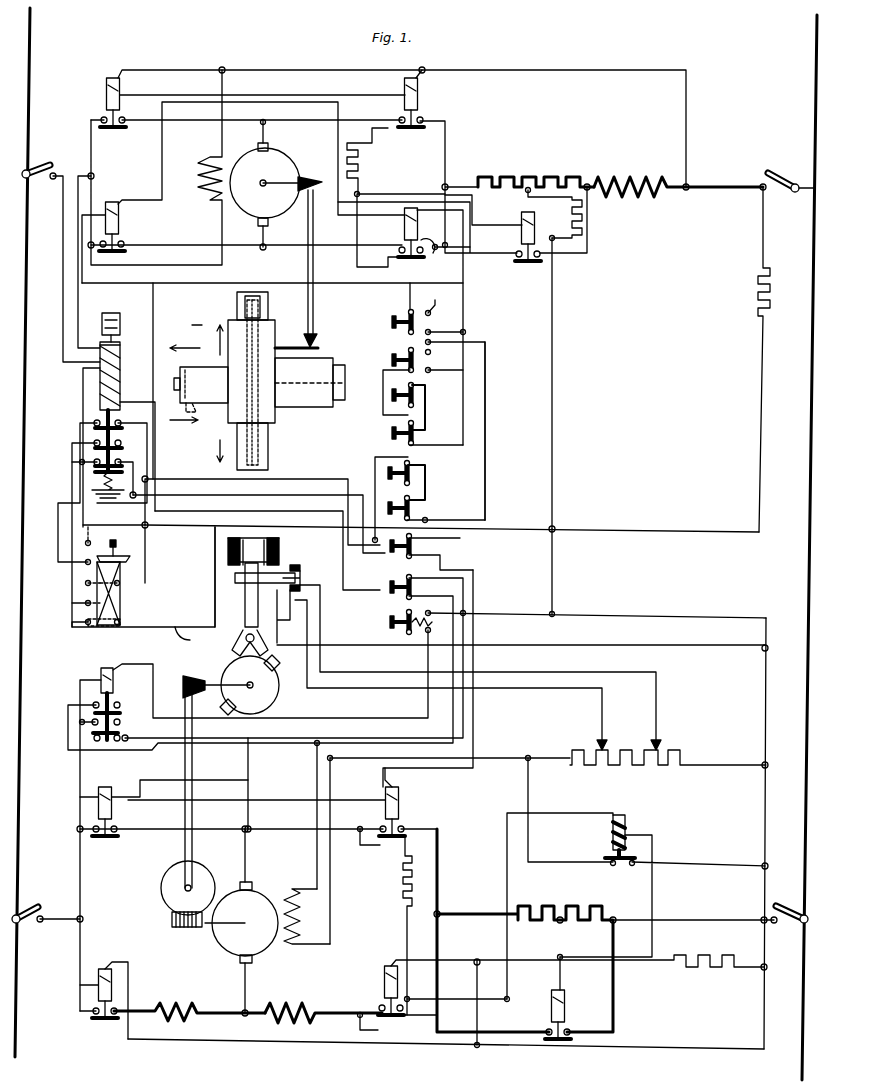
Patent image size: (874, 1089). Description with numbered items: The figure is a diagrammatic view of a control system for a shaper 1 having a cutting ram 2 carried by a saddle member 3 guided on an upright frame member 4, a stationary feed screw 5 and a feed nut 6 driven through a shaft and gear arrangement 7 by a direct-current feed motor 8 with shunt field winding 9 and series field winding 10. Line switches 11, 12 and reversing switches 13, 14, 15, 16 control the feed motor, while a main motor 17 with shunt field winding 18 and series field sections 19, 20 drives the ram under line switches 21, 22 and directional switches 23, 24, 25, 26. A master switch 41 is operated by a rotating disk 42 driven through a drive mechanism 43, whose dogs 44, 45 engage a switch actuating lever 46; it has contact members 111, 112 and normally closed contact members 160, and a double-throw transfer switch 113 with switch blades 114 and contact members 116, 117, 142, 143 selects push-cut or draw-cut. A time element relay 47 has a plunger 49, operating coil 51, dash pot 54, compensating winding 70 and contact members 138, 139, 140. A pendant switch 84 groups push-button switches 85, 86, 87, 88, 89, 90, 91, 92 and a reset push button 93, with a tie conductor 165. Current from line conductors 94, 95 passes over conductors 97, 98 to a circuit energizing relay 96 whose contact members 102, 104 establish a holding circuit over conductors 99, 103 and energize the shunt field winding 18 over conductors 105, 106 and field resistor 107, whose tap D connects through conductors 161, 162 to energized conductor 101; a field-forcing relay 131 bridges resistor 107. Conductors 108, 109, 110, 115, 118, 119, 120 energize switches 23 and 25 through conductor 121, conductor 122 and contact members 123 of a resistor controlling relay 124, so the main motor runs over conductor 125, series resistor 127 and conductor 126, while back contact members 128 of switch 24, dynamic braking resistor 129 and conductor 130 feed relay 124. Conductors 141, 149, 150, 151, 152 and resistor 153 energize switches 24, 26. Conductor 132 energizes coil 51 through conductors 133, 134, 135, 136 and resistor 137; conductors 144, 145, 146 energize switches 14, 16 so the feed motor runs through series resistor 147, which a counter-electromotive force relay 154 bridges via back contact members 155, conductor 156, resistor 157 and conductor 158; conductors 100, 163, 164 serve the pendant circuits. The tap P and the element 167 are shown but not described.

The line conductor 94 is at (28, 70).
The line conductor 95 is at (816, 62).
The conductor 146 is at (618, 67).
The reversing switch 13 is at (115, 78).
The reversing switch 14 is at (425, 70).
The shunt field winding 9 is at (215, 160).
The feed motor 8 is at (280, 160).
The shaft and gear arrangement 7 is at (314, 224).
The reversing switch 16 is at (119, 226).
The conductor 145 is at (420, 287).
The reversing switch 15 is at (404, 226).
The back contact members 155 is at (443, 242).
The conductor 164 is at (372, 140).
The conductor 156 is at (385, 187).
The series resistor 147 is at (545, 176).
The series field winding 10 is at (625, 175).
The line switch 12 is at (776, 170).
The resistor 157 is at (585, 237).
The counter-electromotive force relay 154 is at (522, 239).
The conductor 158 is at (553, 280).
The resistor 137 is at (771, 293).
The line switch 11 is at (50, 163).
The dash pot 54 is at (122, 316).
The operating coil 51 is at (121, 380).
The compensating winding 70 is at (118, 352).
The plunger 49 is at (100, 352).
The time element relay 47 is at (68, 391).
The conductor 133 is at (83, 406).
The contact members 138 is at (104, 486).
The contact member 139 is at (111, 529).
The contact members 140 is at (109, 471).
The conductor 149 is at (76, 470).
The conductor 144 is at (156, 308).
The shaper 1 is at (198, 384).
The upright frame member 4 is at (268, 306).
The feed nut 6 is at (276, 323).
The saddle member 3 is at (275, 415).
The cutting ram 2 is at (201, 389).
The feed screw 5 is at (262, 452).
The push-button switch 85 is at (393, 309).
The tie conductor 165 is at (456, 405).
The push-button switch 86 is at (417, 382).
The push-button switch 87 is at (396, 407).
The push-button switch 88 is at (415, 433).
The conductor 109 is at (378, 480).
The push-button switch 89 is at (401, 478).
The push button 90 is at (431, 508).
The pendant switch 84 is at (452, 481).
The conductor 163 is at (487, 482).
The conductor 136 is at (592, 529).
The conductor 135 is at (218, 526).
The conductor 134 is at (104, 525).
The conductor 119 is at (178, 480).
The conductor 150 is at (205, 497).
The conductor 132 is at (271, 512).
The push-button switch 91 is at (429, 549).
The conductor 108 is at (553, 549).
The conductor 151 is at (475, 587).
The push-button switch 92 is at (408, 587).
The reset push button 93 is at (392, 624).
The conductor 100 is at (592, 615).
The conductor 99 is at (358, 720).
The conductor 105 is at (201, 738).
The conductor 103 is at (155, 752).
The conductor 106 is at (484, 758).
The conductor 120 is at (249, 776).
The conductor 162 is at (596, 645).
The conductor 161 is at (590, 672).
The pick-up tap P is at (454, 675).
The rheostat contact member D is at (665, 711).
The field resistor 107 is at (676, 755).
The conductor 101 is at (766, 686).
The field-forcing relay 131 is at (628, 828).
The contact members 112 is at (226, 546).
The contact members 111 is at (268, 553).
The master switch 41 is at (210, 569).
The conductor 110 is at (310, 562).
The slide 167 is at (305, 578).
The contact members 160 is at (310, 605).
The switch actuating lever 46 is at (253, 639).
The rotating disk 42 is at (279, 700).
The adjustable dog 44 is at (276, 666).
The adjustable dog 45 is at (220, 708).
The drive mechanism 43 is at (220, 795).
The conductor 115 is at (190, 641).
The conductor 141 is at (172, 618).
The switch blades 114 is at (128, 562).
The transfer switch 113 is at (123, 593).
The contact members 143 is at (125, 577).
The contact members 142 is at (120, 619).
The conductor 118 is at (70, 572).
The contact members 117 is at (85, 591).
The contact members 116 is at (84, 613).
The circuit energizing relay 96 is at (142, 668).
The contact members 102 is at (120, 706).
The contact members 104 is at (120, 722).
The conductor 98 is at (78, 762).
The directional switch 23 is at (133, 781).
The conductor 125 is at (208, 829).
The conductor 97 is at (80, 852).
The line switch 21 is at (47, 904).
The line switch 22 is at (710, 904).
The directional switch 26 is at (105, 965).
The conductor 152 is at (330, 1050).
The conductor 121 is at (142, 870).
The main motor 17 is at (272, 873).
The shunt field winding 18 is at (307, 906).
The series field winding section 19 is at (196, 1008).
The series field winding section 20 is at (318, 1010).
The directional switch 24 is at (282, 806).
The back contact members 128 is at (377, 857).
The dynamic braking resistor 129 is at (413, 880).
The conductor 126 is at (438, 935).
The series resistor 127 is at (545, 898).
The directional switch 25 is at (388, 963).
The conductor 122 is at (548, 978).
The resistor 153 is at (690, 956).
The conductor 130 is at (450, 995).
The resistor controlling relay 124 is at (566, 1000).
The contact members 123 is at (556, 1042).